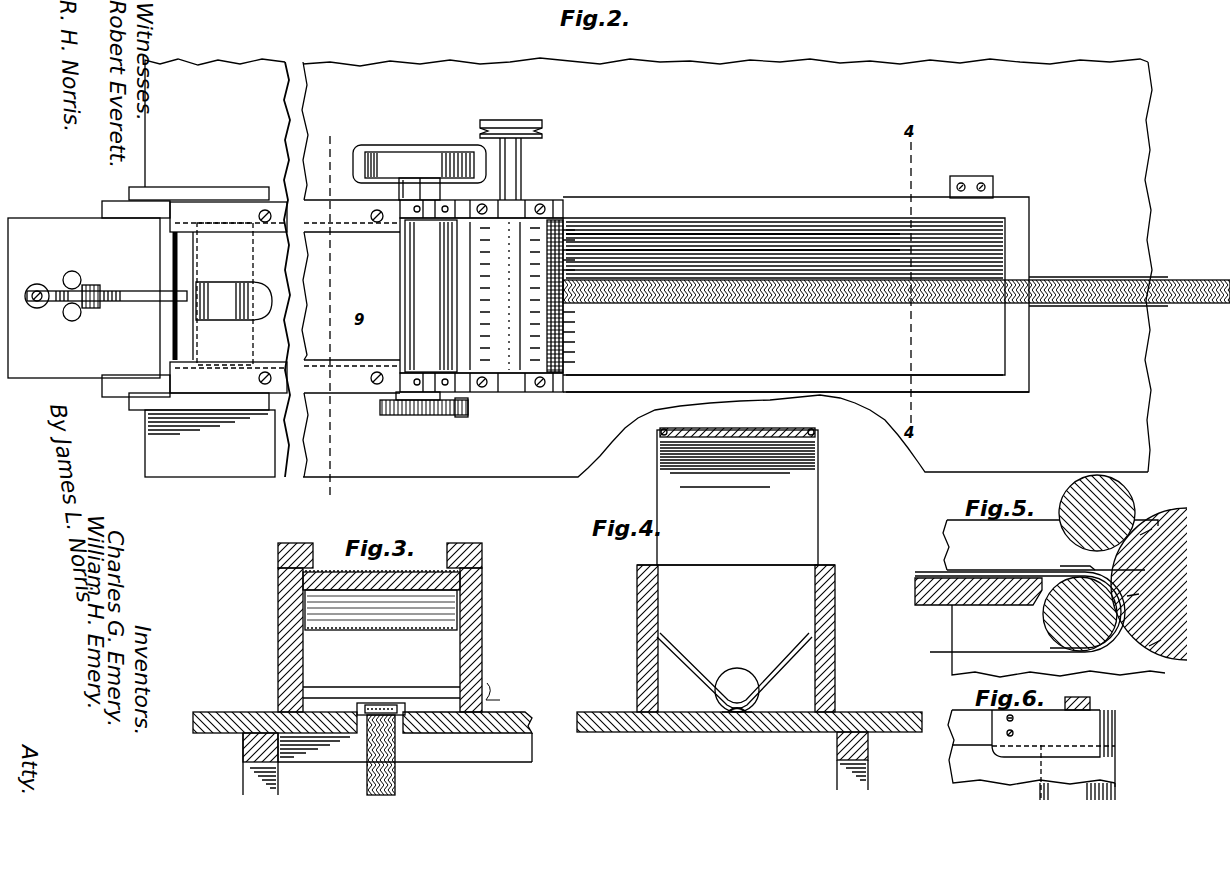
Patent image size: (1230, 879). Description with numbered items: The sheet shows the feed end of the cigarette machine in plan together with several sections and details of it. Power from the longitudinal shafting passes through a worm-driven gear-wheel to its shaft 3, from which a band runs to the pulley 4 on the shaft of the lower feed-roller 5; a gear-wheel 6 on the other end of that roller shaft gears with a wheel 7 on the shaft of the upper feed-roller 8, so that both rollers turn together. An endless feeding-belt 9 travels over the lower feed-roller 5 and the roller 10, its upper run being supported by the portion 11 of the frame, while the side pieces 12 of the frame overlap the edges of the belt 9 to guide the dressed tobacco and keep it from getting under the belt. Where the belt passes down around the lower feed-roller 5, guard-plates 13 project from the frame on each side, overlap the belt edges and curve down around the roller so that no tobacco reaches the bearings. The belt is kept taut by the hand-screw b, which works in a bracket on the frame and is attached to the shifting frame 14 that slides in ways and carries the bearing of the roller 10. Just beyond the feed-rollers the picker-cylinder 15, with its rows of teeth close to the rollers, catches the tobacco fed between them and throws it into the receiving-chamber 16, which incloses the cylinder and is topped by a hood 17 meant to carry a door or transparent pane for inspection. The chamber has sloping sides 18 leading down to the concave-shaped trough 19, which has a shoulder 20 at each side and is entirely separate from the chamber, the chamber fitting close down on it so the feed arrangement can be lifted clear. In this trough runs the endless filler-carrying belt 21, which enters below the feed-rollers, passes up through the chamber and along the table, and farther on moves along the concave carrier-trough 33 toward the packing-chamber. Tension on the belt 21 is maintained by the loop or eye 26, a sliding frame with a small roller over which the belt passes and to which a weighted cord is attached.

In FIG. 2, the shaft 3 is at (328, 317).
In FIG. 2, the pulley 4 is at (414, 151).
In FIG. 2, the lower feed-roller 5 is at (400, 294).
In FIG. 5, the lower feed-roller 5 is at (1052, 621).
In FIG. 6, the lower feed-roller 5 is at (1077, 792).
In FIG. 2, the gear-wheel 6 is at (414, 404).
In FIG. 2, the wheel 7 is at (470, 407).
In FIG. 2, the upper feed-roller 8 is at (481, 295).
In FIG. 5, the upper feed-roller 8 is at (1102, 513).
In FIG. 3, the feeding-belt 9 is at (346, 572).
In FIG. 5, the feeding-belt 9 is at (1020, 622).
In FIG. 6, the feeding-belt 9 is at (1031, 755).
In FIG. 2, the roller 10 is at (234, 301).
In FIG. 3, the roller 10 is at (381, 610).
In FIG. 3, the portion of the frame 11 is at (305, 605).
In FIG. 5, the portion of the frame 11 is at (978, 603).
In FIG. 2, the side pieces 12 is at (352, 296).
In FIG. 3, the side pieces 12 is at (380, 618).
In FIG. 5, the side pieces 12 is at (1050, 545).
In FIG. 2, the guard-plates 13 is at (733, 248).
In FIG. 5, the guard-plates 13 is at (1047, 569).
In FIG. 6, the guard-plates 13 is at (1052, 727).
In FIG. 2, the shifting frame 14 is at (163, 212).
In FIG. 2, the picker-cylinder 15 is at (505, 296).
In FIG. 5, the picker-cylinder 15 is at (1149, 584).
In FIG. 2, the receiving-chamber 16 is at (796, 284).
In FIG. 4, the receiving-chamber 16 is at (724, 638).
In FIG. 4, the hood 17 is at (737, 496).
In FIG. 2, the sloping sides 18 is at (797, 366).
In FIG. 4, the sloping sides 18 is at (672, 653).
In FIG. 4, the concave-shaped trough 19 is at (730, 712).
In FIG. 4, the shoulder 20 is at (745, 672).
In FIG. 2, the filler-carrying belt 21 is at (896, 283).
In FIG. 3, the filler-carrying belt 21 is at (397, 783).
In FIG. 4, the filler-carrying belt 21 is at (743, 713).
In FIG. 3, the loop or eye 26 is at (405, 710).
In FIG. 2, the concave carrier-trough 33 is at (1104, 306).
In FIG. 2, the hand-screw b is at (106, 295).